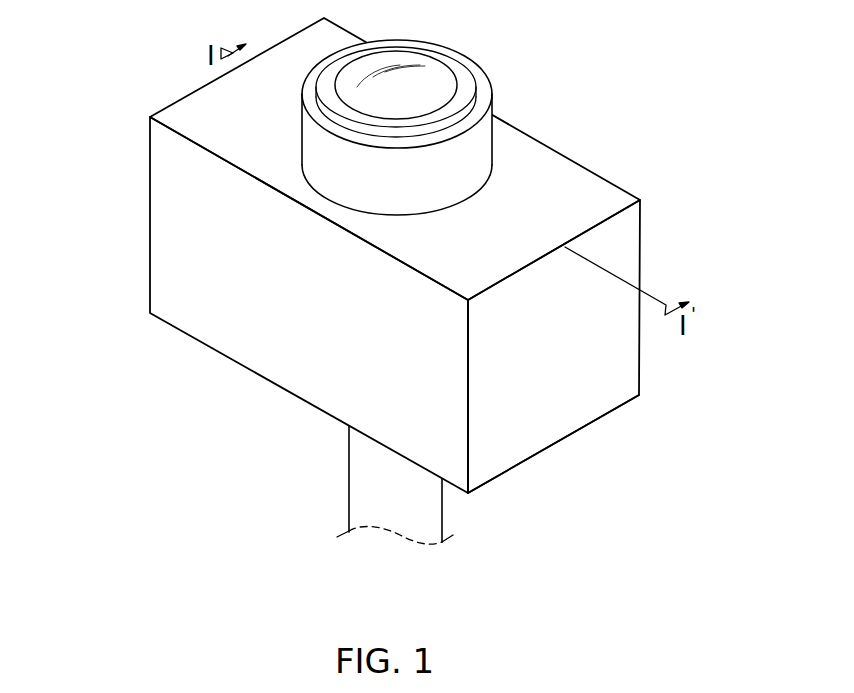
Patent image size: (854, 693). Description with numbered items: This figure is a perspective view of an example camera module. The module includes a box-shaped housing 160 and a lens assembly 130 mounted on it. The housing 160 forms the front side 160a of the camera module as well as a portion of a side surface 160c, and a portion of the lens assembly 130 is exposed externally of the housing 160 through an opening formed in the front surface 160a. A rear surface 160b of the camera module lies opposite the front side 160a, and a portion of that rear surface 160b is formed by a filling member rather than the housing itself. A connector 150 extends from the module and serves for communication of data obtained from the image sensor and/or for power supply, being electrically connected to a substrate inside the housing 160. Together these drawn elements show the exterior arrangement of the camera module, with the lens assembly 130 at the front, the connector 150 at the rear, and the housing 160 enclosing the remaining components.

The lens assembly 130 is at (473, 147).
The connector 150 is at (359, 471).
The housing 160 is at (397, 262).
The front surface 160a is at (582, 192).
The rear surface 160b is at (562, 425).
The side surface 160c is at (598, 358).